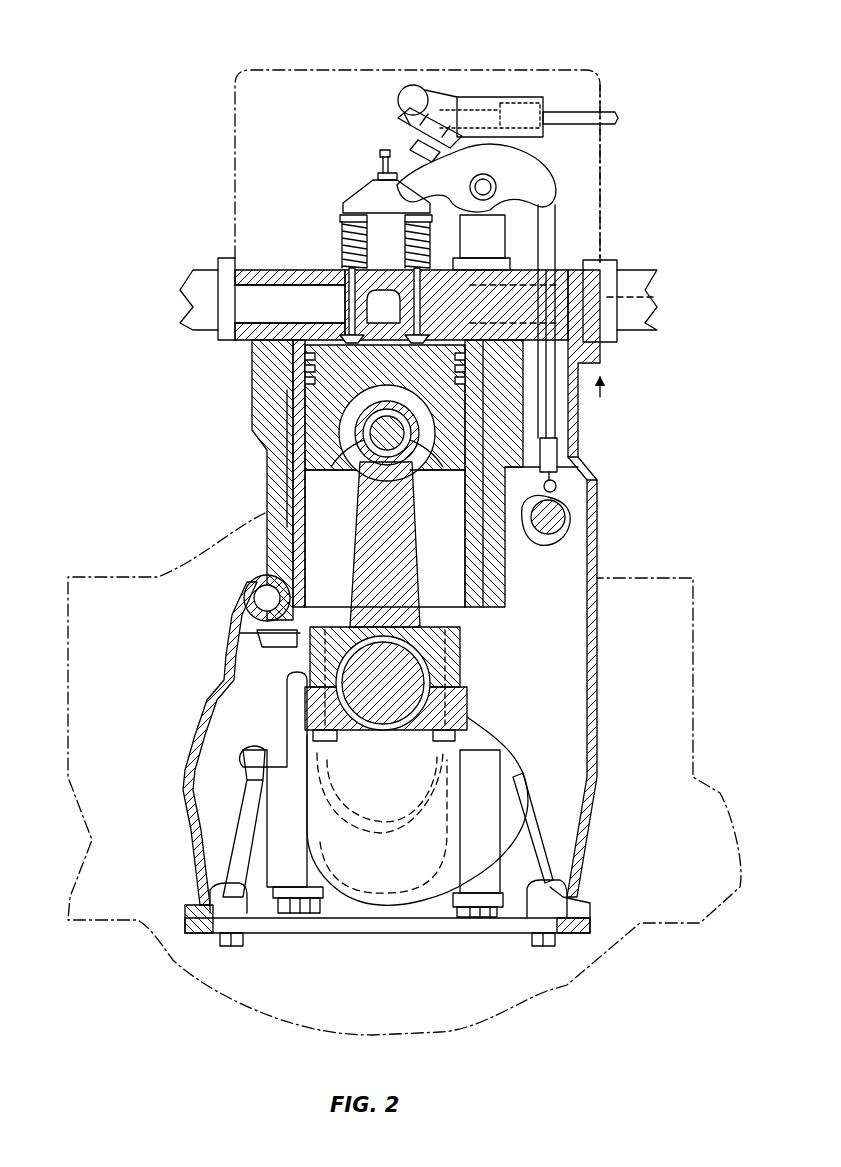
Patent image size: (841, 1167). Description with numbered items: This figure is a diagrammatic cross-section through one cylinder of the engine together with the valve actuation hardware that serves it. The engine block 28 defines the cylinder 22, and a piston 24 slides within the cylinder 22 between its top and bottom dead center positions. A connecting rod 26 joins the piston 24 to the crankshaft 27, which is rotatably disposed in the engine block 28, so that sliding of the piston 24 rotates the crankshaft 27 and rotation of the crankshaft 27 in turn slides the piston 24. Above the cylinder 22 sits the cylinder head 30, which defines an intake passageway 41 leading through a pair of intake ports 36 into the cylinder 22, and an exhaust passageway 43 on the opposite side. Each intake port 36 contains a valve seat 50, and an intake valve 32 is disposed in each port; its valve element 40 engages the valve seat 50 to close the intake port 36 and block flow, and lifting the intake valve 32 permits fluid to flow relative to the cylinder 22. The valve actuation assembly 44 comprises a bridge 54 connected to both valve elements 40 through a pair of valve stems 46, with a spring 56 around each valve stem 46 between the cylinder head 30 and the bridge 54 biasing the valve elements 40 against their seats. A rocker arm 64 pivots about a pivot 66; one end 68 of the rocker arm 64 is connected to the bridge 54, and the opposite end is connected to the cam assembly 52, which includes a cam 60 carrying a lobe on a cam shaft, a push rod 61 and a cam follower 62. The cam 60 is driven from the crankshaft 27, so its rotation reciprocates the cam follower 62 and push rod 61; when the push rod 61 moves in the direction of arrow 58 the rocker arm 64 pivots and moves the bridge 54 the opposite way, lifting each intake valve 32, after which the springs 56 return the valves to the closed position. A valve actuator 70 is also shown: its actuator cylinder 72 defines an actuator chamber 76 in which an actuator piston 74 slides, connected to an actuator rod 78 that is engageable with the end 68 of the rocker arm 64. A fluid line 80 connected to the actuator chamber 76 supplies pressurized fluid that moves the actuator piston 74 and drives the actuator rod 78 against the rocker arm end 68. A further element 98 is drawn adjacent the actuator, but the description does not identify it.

The cylinder 22 is at (305, 500).
The piston 24 is at (290, 448).
The connecting rod 26 is at (425, 572).
The crankshaft 27 is at (498, 752).
The engine block 28 is at (258, 560).
The cylinder head 30 is at (600, 338).
The intake valve 32 is at (347, 272).
The intake port 36 is at (345, 333).
The valve element 40 is at (365, 332).
The intake passageway 41 is at (243, 298).
The exhaust passageway 43 is at (652, 300).
The valve actuation assembly 44 is at (642, 66).
The valve stem 46 is at (340, 250).
The valve seat 50 is at (310, 370).
The cam assembly 52 is at (685, 433).
The bridge 54 is at (367, 200).
The spring 56 is at (340, 217).
The arrow 58 is at (605, 394).
The cam 60 is at (528, 555).
The push rod 61 is at (556, 420).
The cam follower 62 is at (557, 488).
The rocker arm 64 is at (560, 175).
The pivot 66 is at (505, 148).
The end of rocker arm 68 is at (382, 152).
The valve actuator 70 is at (440, 76).
The actuator cylinder 72 is at (400, 97).
The actuator piston 74 is at (418, 89).
The actuator chamber 76 is at (460, 100).
The actuator rod 78 is at (406, 132).
The fluid line 80 is at (553, 110).
The solenoid 98 is at (517, 100).